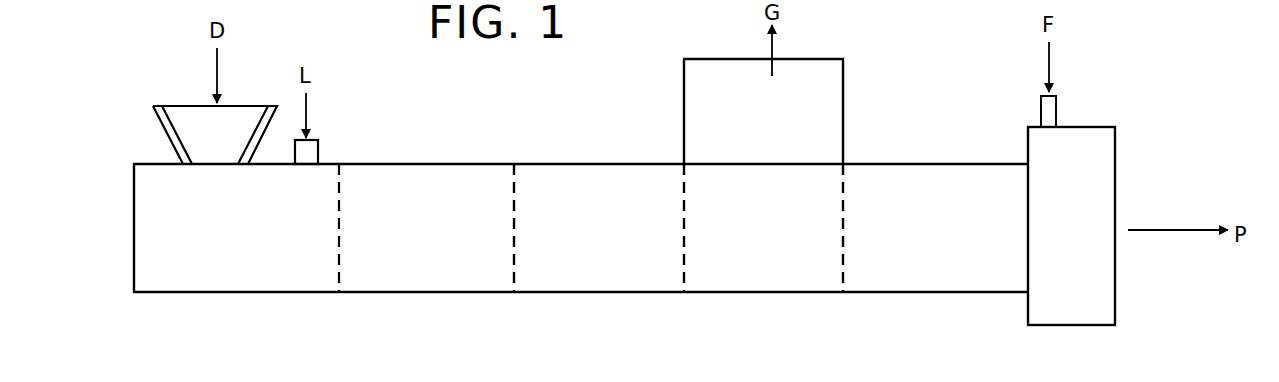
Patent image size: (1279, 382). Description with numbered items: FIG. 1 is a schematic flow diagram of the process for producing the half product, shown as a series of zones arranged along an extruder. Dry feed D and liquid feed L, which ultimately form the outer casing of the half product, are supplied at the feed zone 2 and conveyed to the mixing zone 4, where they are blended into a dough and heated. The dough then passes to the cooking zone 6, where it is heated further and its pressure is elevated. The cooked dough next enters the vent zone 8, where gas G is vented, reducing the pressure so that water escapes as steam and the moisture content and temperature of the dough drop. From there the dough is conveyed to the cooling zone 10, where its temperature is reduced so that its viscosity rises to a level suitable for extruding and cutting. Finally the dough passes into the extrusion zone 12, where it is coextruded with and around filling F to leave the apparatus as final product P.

The feed zone 2 is at (235, 292).
The mixing zone 4 is at (424, 164).
The cooking zone 6 is at (598, 164).
The vent zone 8 is at (843, 117).
The cooling zone 10 is at (948, 164).
The extrusion zone 12 is at (1097, 127).